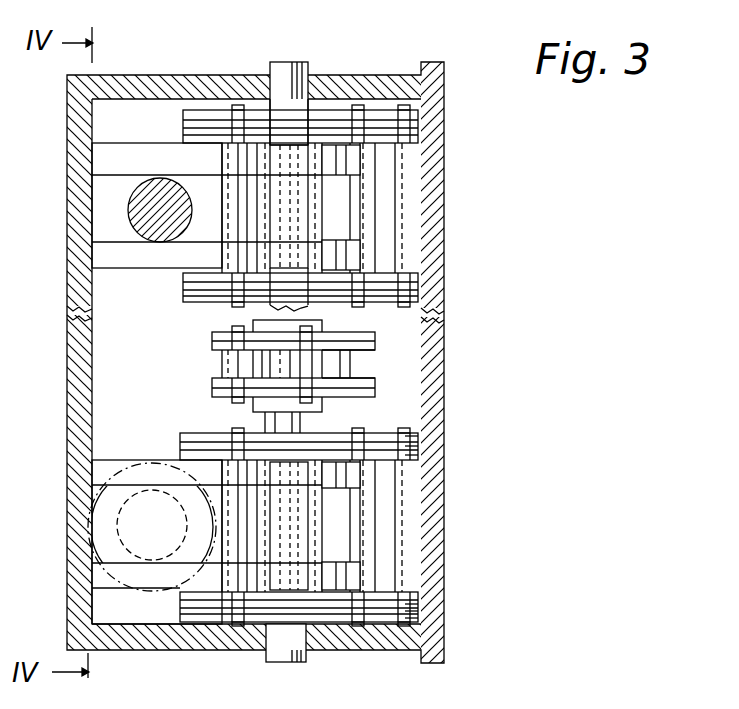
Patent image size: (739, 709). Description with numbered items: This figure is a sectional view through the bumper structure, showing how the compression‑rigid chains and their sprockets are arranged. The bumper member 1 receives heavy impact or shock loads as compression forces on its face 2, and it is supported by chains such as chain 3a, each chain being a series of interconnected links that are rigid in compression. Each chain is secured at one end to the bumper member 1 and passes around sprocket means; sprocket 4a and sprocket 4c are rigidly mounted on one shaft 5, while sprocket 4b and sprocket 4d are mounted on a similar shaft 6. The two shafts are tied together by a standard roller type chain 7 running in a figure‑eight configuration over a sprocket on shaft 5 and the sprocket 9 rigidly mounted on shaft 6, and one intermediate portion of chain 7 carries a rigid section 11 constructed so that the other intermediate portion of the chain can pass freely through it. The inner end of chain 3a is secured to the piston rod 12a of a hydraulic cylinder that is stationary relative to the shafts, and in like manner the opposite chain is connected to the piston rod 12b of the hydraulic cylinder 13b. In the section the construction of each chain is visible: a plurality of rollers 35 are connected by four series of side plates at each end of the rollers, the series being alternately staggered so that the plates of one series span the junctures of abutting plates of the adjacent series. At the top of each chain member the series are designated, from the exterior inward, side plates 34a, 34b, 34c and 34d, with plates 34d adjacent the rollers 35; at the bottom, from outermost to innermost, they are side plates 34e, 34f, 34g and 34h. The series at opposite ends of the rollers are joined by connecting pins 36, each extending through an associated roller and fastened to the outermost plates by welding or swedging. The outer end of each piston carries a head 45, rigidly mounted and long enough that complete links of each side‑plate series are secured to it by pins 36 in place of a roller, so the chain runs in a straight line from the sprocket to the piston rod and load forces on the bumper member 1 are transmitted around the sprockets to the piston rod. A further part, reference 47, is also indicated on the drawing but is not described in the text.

The bumper member 1 is at (447, 161).
The face 2 is at (440, 258).
The chain 3a is at (378, 103).
The sprocket 4a is at (333, 245).
The sprocket 4b is at (152, 580).
The sprocket 4c is at (145, 470).
The sprocket 4d is at (315, 526).
The shaft 5 is at (288, 66).
The shaft 6 is at (275, 663).
The roller type chain 7 is at (383, 352).
The sprocket 9 is at (335, 365).
The rigid section 11 is at (212, 387).
The piston rod 12a is at (161, 186).
The piston rod 12b is at (122, 538).
The hydraulic cylinder 13b is at (150, 578).
The side plate 34a is at (420, 440).
The side plate 34b is at (421, 446).
The side plate 34c is at (421, 453).
The side plate 34d is at (421, 460).
The side plate 34e is at (421, 620).
The side plate 34f is at (421, 610).
The side plate 34g is at (421, 602).
The side plate 34h is at (421, 598).
The roller 35 is at (370, 215).
The connecting pin 36 is at (368, 310).
The head 45 is at (107, 222).
The bearing support 47 is at (415, 191).